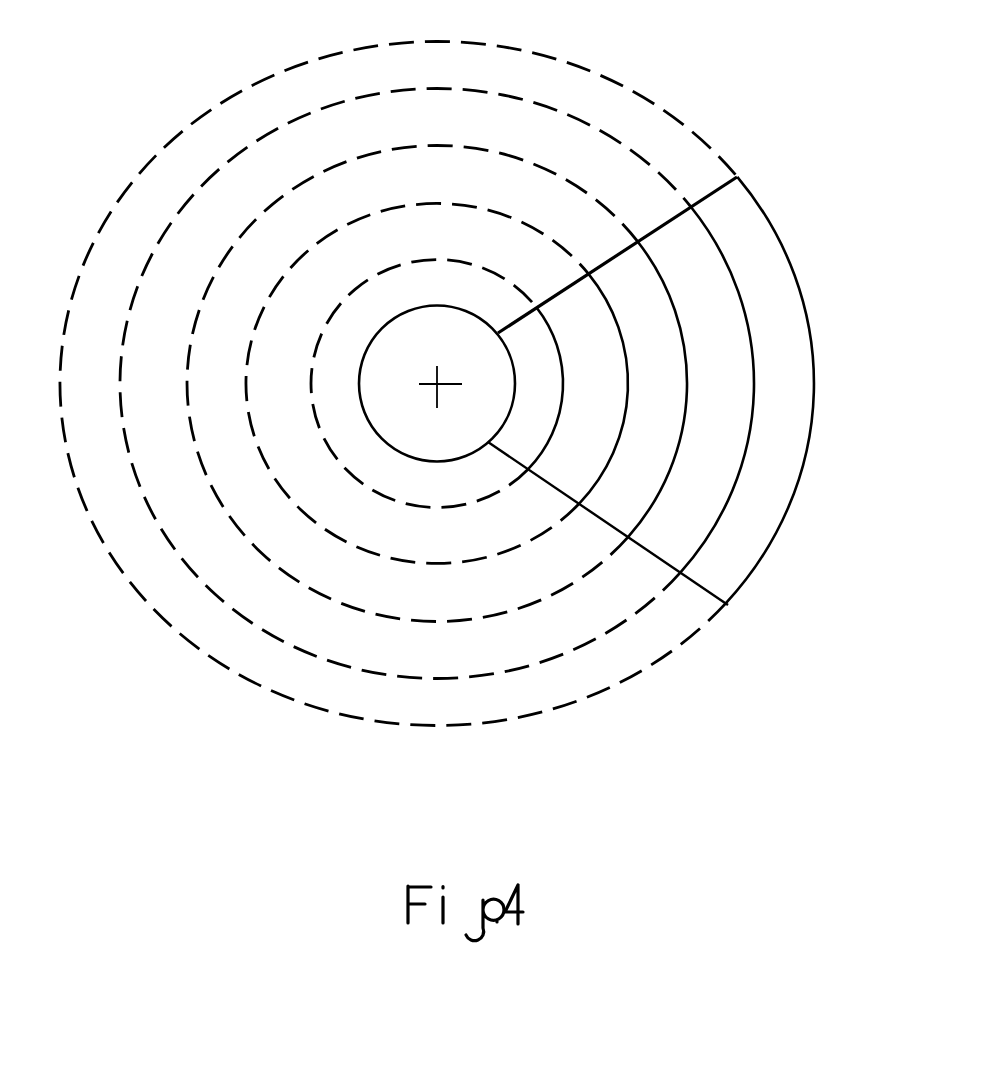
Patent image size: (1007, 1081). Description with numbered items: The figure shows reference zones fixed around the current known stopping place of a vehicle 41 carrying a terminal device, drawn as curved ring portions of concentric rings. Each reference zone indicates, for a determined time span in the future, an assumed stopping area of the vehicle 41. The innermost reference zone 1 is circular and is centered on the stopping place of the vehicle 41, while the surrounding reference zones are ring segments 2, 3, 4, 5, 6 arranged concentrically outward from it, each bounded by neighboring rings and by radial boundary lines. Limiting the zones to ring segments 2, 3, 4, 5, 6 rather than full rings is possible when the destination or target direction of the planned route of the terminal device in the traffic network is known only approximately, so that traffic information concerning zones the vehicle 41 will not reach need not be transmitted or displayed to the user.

The reference zone 1 is at (463, 329).
The ring segment 2 is at (517, 343).
The ring segment 3 is at (582, 335).
The ring segment 4 is at (632, 292).
The ring segment 5 is at (692, 258).
The ring segment 6 is at (758, 303).
The vehicle 41 is at (430, 395).